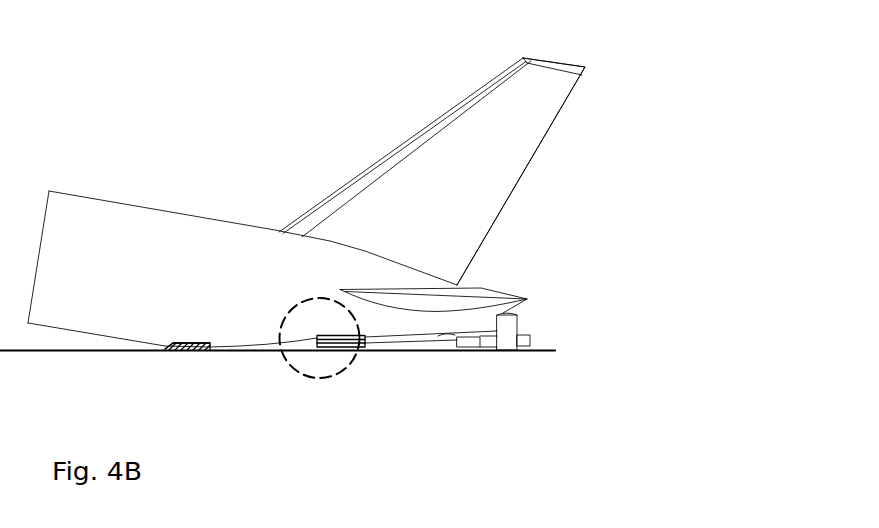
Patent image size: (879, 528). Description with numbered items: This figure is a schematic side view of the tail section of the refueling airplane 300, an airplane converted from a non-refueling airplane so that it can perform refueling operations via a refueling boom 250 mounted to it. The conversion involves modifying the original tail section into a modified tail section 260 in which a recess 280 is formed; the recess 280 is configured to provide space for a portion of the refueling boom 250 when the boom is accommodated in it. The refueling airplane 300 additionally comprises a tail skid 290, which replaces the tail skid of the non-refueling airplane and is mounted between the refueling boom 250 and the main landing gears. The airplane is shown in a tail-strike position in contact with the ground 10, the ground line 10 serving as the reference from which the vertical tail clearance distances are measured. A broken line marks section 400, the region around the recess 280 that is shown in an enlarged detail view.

The ground line 10 is at (530, 351).
The refueling boom 250 is at (417, 341).
The modified tail section 260 is at (322, 267).
The recess 280 is at (317, 336).
The tail skid 290 is at (182, 351).
The refueling airplane 300 is at (214, 143).
The section 400 is at (352, 362).